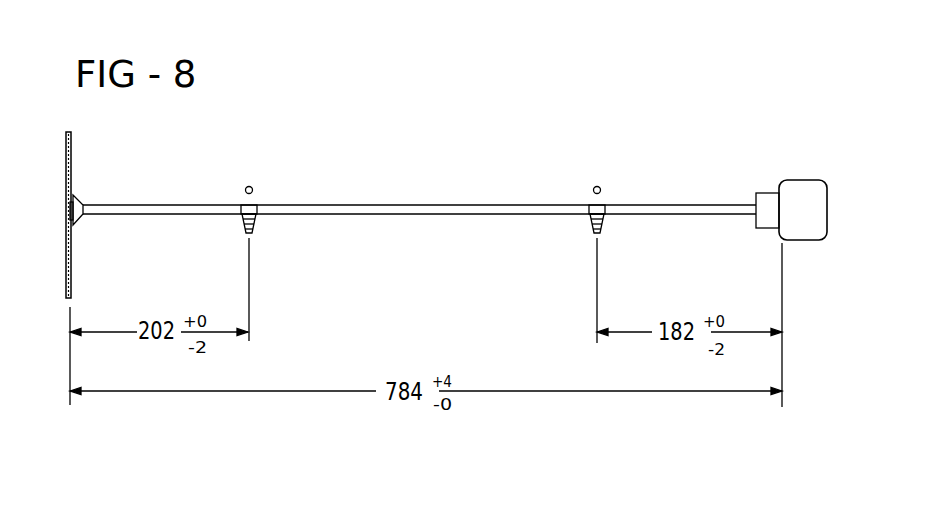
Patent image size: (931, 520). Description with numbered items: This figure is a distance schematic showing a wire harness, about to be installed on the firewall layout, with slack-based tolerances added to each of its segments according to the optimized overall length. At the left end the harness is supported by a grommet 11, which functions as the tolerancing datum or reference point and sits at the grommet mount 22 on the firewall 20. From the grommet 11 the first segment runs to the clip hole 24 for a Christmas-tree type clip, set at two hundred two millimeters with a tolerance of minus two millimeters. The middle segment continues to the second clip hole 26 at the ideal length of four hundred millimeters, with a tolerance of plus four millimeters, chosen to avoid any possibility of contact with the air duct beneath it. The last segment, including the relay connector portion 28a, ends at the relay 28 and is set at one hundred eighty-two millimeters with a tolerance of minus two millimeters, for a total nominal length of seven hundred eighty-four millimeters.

The grommet 11 is at (80, 198).
The firewall 20 is at (72, 145).
The grommet mount 22 is at (85, 213).
The clip hole 24 is at (249, 186).
The second clip hole 26 is at (596, 186).
The relay 28 is at (802, 197).
The relay connector portion 28a is at (765, 205).